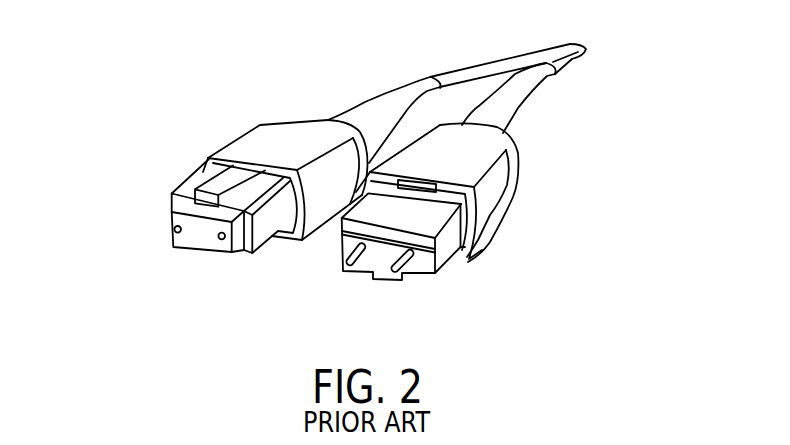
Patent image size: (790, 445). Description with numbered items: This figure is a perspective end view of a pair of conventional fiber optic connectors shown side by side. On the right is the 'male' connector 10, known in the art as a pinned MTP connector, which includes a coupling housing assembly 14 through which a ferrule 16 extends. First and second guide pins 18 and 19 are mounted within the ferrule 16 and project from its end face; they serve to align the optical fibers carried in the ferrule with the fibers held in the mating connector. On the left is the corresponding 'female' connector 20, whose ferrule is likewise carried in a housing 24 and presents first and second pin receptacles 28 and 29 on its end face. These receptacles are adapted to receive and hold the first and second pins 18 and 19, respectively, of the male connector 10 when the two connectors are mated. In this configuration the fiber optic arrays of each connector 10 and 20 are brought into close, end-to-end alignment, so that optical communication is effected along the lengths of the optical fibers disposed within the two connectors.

The connector 10 is at (501, 178).
The coupling housing assembly 14 is at (520, 207).
The ferrule 16 is at (305, 249).
The first guide pin 18 is at (396, 272).
The second guide pin 19 is at (350, 266).
The female connector 20 is at (338, 137).
The connector housing 24 is at (285, 151).
The first pin receptacle 28 is at (177, 239).
The second pin receptacle 29 is at (222, 242).